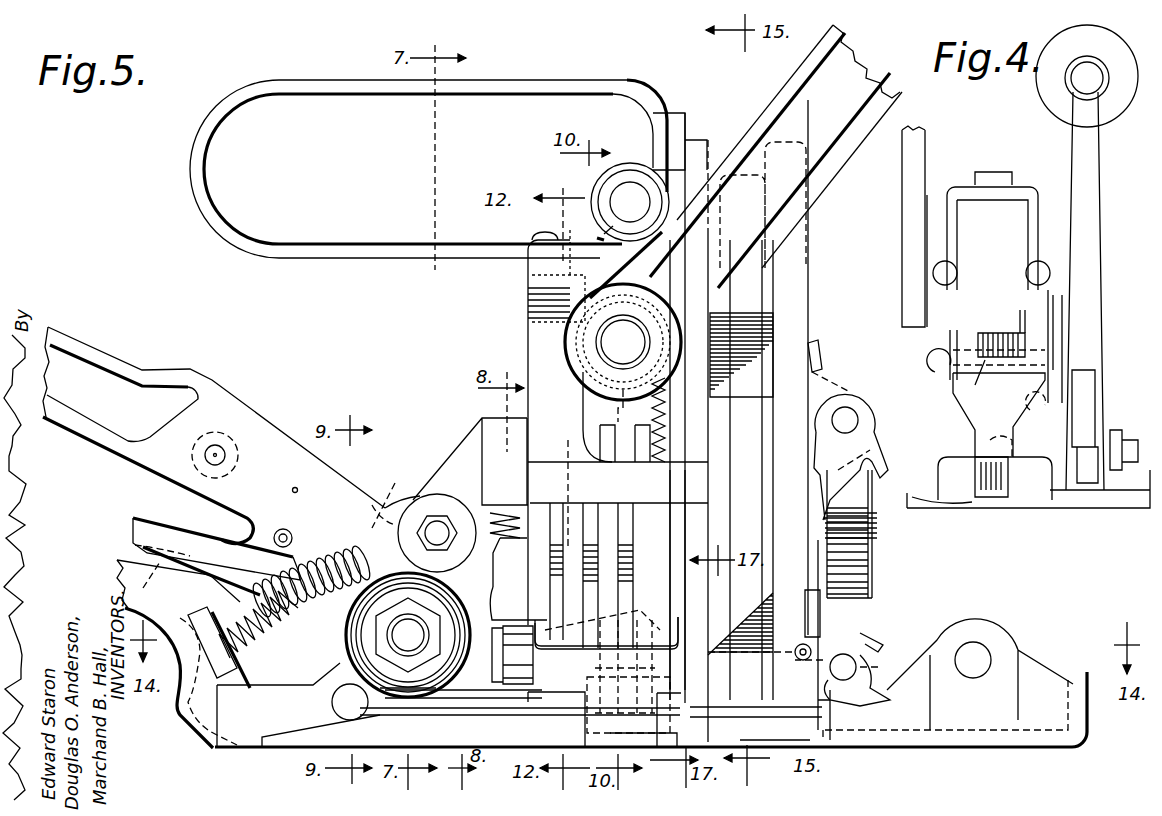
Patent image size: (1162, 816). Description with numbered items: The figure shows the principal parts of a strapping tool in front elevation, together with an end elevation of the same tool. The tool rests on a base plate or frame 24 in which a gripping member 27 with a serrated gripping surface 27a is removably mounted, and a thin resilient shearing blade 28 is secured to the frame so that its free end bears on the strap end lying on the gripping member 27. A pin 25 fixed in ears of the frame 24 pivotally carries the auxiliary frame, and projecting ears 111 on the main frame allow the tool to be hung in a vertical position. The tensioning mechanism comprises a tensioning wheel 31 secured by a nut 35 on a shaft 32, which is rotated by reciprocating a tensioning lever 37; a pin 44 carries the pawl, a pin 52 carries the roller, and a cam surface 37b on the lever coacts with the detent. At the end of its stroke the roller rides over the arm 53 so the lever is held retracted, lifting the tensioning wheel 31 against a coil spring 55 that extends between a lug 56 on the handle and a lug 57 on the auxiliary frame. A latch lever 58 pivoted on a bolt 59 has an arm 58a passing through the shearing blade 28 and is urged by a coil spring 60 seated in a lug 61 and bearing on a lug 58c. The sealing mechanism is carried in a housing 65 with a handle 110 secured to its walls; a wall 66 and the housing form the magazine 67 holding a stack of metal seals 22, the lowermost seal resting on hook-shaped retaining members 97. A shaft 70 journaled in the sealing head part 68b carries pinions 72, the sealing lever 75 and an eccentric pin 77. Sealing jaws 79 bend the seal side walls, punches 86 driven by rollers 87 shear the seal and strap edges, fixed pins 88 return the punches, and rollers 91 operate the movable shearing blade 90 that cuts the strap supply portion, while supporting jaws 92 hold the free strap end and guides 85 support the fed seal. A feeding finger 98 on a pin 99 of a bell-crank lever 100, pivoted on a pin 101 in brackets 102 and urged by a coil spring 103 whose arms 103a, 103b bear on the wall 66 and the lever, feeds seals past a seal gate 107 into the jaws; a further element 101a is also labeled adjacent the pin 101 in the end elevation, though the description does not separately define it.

In FIG. 5, the bell-crank lever 100 is at (236, 246).
In FIG. 4, the bell-crank lever 100 is at (968, 417).
In FIG. 5, the handle 110 is at (607, 194).
In FIG. 5, the sealing lever 75 is at (830, 165).
In FIG. 4, the sealing lever 75 is at (915, 163).
In FIG. 5, the housing 65 is at (528, 315).
In FIG. 5, the pinions 72 is at (578, 292).
In FIG. 5, the shaft 70 is at (600, 348).
In FIG. 5, the sealing head part 68b is at (598, 404).
In FIG. 5, the magazine 67 is at (768, 300).
In FIG. 5, the metal seal 22 is at (762, 342).
In FIG. 5, the pin 101 is at (847, 418).
In FIG. 4, the pin 101 is at (950, 350).
In FIG. 5, the spring arm 103a is at (820, 356).
In FIG. 4, the spring arm 103a is at (1024, 308).
In FIG. 5, the tensioning lever 37 is at (240, 415).
In FIG. 4, the tensioning lever 37 is at (1090, 245).
In FIG. 5, the pin 52 is at (220, 453).
In FIG. 5, the pin 44 is at (290, 532).
In FIG. 5, the lug 57 is at (392, 482).
In FIG. 5, the bolt 59 is at (437, 528).
In FIG. 5, the lug 61 is at (478, 442).
In FIG. 5, the coil spring 60 is at (490, 512).
In FIG. 5, the movable shearing blade 90 is at (560, 565).
In FIG. 5, the rollers 91 is at (570, 530).
In FIG. 5, the lug 58c is at (545, 527).
In FIG. 5, the punches 86 is at (592, 508).
In FIG. 5, the rollers 87 is at (628, 512).
In FIG. 5, the sealing jaws 79 is at (637, 567).
In FIG. 5, the arm 58a is at (518, 635).
In FIG. 5, the pins 88 is at (632, 635).
In FIG. 5, the shaft 32 is at (408, 635).
In FIG. 5, the nut 35 is at (420, 656).
In FIG. 5, the tensioning wheel 31 is at (335, 612).
In FIG. 5, the cam surface 37b is at (216, 556).
In FIG. 5, the latch lever 58 is at (150, 527).
In FIG. 5, the arm 53 is at (183, 572).
In FIG. 5, the lug 56 is at (220, 655).
In FIG. 5, the coil spring 55 is at (258, 631).
In FIG. 5, the pin 25 is at (332, 703).
In FIG. 5, the base plate or frame 24 is at (850, 745).
In FIG. 4, the base plate or frame 24 is at (1075, 522).
In FIG. 5, the serrated gripping surface 27a is at (380, 717).
In FIG. 5, the gripping member 27 is at (448, 746).
In FIG. 5, the shearing blade 28 is at (498, 703).
In FIG. 5, the guides 85 is at (572, 680).
In FIG. 5, the supporting jaws 92 is at (575, 700).
In FIG. 5, the seal gate 107 is at (659, 739).
In FIG. 5, the hook-shaped retaining members 97 is at (768, 720).
In FIG. 4, the hook-shaped retaining members 97 is at (965, 505).
In FIG. 5, the pin 99 is at (855, 660).
In FIG. 5, the feeding finger 98 is at (882, 703).
In FIG. 4, the feeding finger 98 is at (992, 498).
In FIG. 5, the projecting ears 111 is at (978, 635).
In FIG. 4, the wall 66 is at (1005, 232).
In FIG. 4, the brackets 102 is at (1013, 330).
In FIG. 4, the pin 77 is at (1062, 300).
In FIG. 4, the rod 101a is at (1060, 320).
In FIG. 4, the coil spring 103 is at (1008, 363).
In FIG. 4, the spring arm 103b is at (945, 450).